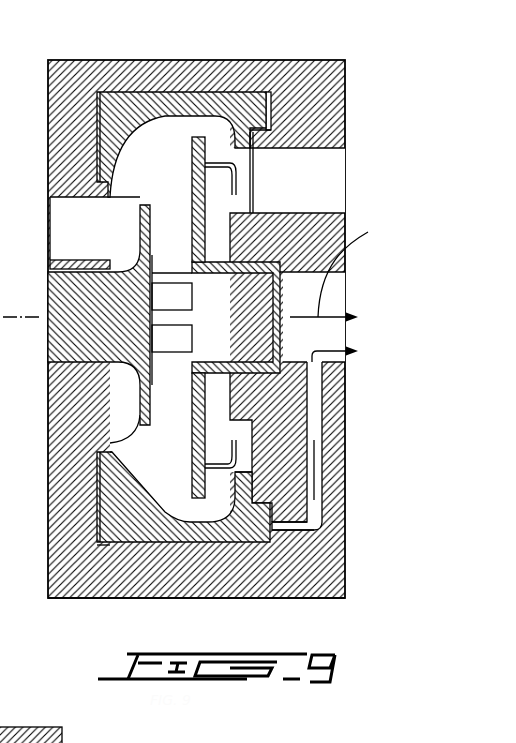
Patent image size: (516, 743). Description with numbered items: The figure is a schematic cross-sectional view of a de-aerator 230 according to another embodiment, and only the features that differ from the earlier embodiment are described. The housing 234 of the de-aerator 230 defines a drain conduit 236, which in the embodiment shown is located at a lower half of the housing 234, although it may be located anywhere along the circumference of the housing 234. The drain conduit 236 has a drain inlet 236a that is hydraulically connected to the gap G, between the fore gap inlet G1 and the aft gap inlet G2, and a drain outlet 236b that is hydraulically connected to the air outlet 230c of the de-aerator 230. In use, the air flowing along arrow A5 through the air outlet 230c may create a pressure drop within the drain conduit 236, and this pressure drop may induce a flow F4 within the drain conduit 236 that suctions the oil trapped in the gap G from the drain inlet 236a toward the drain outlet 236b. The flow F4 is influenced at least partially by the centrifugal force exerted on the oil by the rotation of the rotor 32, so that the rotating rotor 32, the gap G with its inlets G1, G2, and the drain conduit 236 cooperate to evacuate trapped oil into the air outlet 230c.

The de-aerator 230 is at (325, 45).
The rotor 32 is at (318, 105).
The arrow (air flow direction) A5 is at (351, 261).
The air outlet 230c is at (358, 288).
The drain outlet 236b is at (316, 350).
The flow F4 is at (314, 412).
The aft gap inlet G2 is at (262, 468).
The fore gap inlet G1 is at (120, 455).
The gap G is at (117, 562).
The drain conduit 236 is at (322, 538).
The drain inlet 236a is at (292, 548).
The housing 234 is at (148, 583).